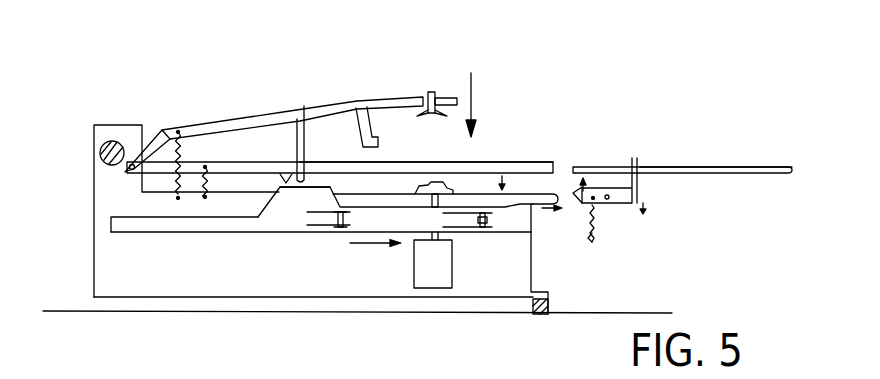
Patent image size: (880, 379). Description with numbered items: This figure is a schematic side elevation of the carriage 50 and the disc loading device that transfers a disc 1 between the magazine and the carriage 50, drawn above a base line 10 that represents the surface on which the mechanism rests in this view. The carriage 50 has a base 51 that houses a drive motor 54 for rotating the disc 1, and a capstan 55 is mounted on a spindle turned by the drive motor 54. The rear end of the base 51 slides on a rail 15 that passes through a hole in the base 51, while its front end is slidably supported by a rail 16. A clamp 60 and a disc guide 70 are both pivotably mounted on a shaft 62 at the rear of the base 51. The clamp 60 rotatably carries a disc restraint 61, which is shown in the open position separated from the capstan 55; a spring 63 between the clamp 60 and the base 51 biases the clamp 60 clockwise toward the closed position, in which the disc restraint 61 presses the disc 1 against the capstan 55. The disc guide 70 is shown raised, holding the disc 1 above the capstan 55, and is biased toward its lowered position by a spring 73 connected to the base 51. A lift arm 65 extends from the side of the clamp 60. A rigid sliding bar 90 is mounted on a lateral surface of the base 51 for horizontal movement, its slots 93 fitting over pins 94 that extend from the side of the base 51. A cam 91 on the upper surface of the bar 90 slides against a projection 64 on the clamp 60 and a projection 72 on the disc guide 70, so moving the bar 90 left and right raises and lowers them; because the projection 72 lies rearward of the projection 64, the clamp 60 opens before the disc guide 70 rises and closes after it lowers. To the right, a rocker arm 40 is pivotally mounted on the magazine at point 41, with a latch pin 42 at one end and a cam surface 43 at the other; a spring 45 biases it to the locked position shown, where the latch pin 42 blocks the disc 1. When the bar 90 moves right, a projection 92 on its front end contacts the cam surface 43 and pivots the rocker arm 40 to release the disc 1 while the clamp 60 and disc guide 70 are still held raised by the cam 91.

The disc 1 is at (742, 166).
The base surface 10 is at (56, 310).
The rail 15 is at (97, 148).
The rail 16 is at (540, 314).
The rocker arm 40 is at (636, 205).
The pivot point 41 is at (608, 200).
The latch pin 42 is at (634, 160).
The cam surface 43 is at (582, 204).
The spring 45 is at (586, 243).
The carriage 50 is at (282, 219).
The base 51 is at (94, 243).
The drive motor 54 is at (436, 297).
The capstan 55 is at (428, 188).
The clamp 60 is at (348, 107).
The disc restraint 61 is at (438, 96).
The shaft 62 is at (132, 163).
The spring 63 is at (332, 189).
The projection 64 is at (312, 172).
The lift arm 65 is at (376, 135).
The disc guide 70 is at (480, 161).
The projection 72 is at (283, 173).
The spring 73 is at (210, 184).
The sliding bar 90 is at (267, 227).
The cam 91 is at (295, 187).
The projection 92 is at (552, 228).
The slots 93 is at (325, 224).
The pins 94 is at (342, 228).